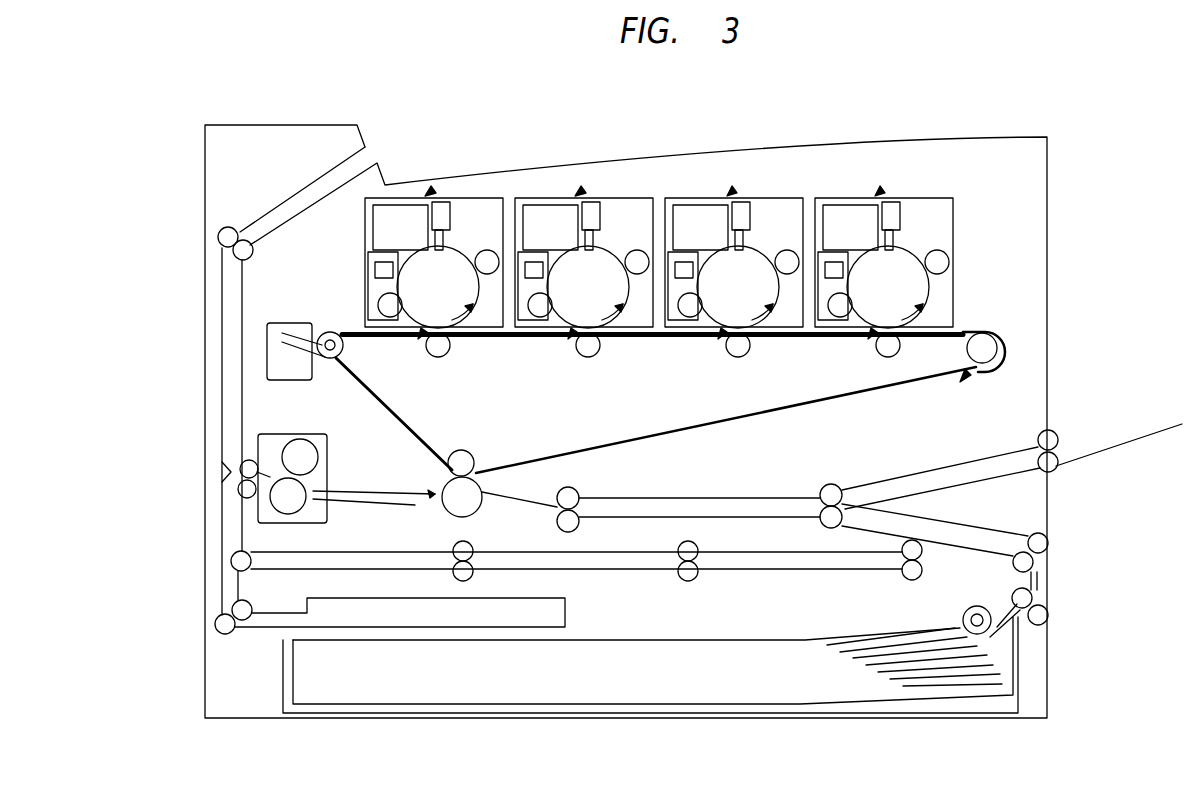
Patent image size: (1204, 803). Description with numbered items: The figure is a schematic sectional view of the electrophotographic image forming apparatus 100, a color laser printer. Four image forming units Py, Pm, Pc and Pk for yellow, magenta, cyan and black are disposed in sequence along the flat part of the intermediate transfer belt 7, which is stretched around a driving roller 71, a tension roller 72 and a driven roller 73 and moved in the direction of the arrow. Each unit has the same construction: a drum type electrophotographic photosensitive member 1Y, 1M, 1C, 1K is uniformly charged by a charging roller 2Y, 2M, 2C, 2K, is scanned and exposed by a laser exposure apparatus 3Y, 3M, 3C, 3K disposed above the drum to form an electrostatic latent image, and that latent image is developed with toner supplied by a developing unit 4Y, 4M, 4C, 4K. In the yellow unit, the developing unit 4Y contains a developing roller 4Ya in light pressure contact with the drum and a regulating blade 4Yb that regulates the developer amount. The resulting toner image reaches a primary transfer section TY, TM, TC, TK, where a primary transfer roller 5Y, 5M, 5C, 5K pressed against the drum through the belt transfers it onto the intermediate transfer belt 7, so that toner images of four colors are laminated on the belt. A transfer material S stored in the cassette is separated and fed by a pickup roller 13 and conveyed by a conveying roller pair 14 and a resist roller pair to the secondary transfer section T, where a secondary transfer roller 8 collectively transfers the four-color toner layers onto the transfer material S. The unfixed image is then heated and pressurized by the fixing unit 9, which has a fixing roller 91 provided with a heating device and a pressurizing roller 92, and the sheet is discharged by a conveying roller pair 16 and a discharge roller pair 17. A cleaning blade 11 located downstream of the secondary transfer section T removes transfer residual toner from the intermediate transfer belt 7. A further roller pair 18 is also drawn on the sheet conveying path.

The electrophotographic image forming apparatus 100 is at (943, 116).
The electrophotographic photosensitive member 1Y is at (466, 346).
The electrophotographic photosensitive member 1M is at (598, 308).
The electrophotographic photosensitive member 1C is at (747, 308).
The electrophotographic photosensitive member 1K is at (897, 308).
The charging roller 2Y is at (487, 249).
The charging roller 2M is at (636, 242).
The charging roller 2C is at (786, 242).
The charging roller 2K is at (936, 242).
The laser exposure apparatus 3Y is at (456, 197).
The laser exposure apparatus 3M is at (584, 254).
The laser exposure apparatus 3C is at (734, 254).
The laser exposure apparatus 3K is at (884, 254).
The developing unit 4Y is at (358, 275).
The developing roller 4Ya is at (378, 308).
The regulating blade 4Yb is at (375, 282).
The developing unit 4M is at (535, 323).
The developing unit 4C is at (685, 323).
The developing unit 4K is at (835, 323).
The primary transfer roller 5Y is at (442, 358).
The primary transfer roller 5M is at (594, 363).
The primary transfer roller 5C is at (743, 363).
The primary transfer roller 5K is at (895, 373).
The primary transfer section TY is at (413, 340).
The primary transfer section TM is at (561, 345).
The primary transfer section TC is at (711, 345).
The primary transfer section TK is at (861, 345).
The image forming unit Py is at (431, 186).
The image forming unit Pm is at (592, 160).
The image forming unit Pc is at (740, 173).
The image forming unit Pk is at (887, 170).
The intermediate transfer belt 7 is at (707, 433).
The driving roller 71 is at (345, 350).
The tension roller 72 is at (987, 382).
The driven roller 73 is at (474, 458).
The secondary transfer roller 8 is at (440, 512).
The secondary transfer section T is at (502, 481).
The fixing unit 9 is at (313, 463).
The fixing roller 91 is at (320, 462).
The pressurizing roller 92 is at (305, 510).
The cleaning blade 11 is at (278, 320).
The pickup roller 13 is at (964, 604).
The conveying roller pair 14 is at (1049, 617).
The conveying roller pair 16 is at (222, 463).
The discharge roller pair 17 is at (255, 252).
The sheet conveyance roller pair 18 is at (580, 490).
The transfer material S is at (868, 641).